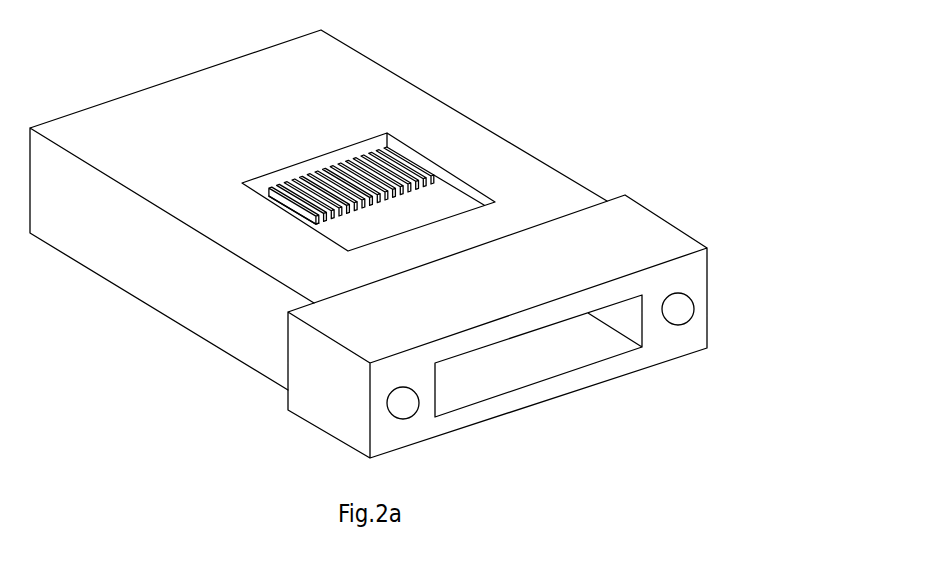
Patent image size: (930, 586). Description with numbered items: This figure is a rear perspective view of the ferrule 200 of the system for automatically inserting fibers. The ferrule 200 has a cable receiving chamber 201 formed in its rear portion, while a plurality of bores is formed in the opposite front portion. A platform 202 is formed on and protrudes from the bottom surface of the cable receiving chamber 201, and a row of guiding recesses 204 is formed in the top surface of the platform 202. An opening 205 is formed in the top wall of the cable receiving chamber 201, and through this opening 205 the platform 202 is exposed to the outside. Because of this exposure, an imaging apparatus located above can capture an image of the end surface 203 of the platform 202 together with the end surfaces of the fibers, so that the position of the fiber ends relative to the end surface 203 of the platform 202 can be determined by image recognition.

The ferrule 200 is at (388, 100).
The cable receiving chamber 201 is at (527, 356).
The platform 202 is at (268, 195).
The end surface of the platform 203 is at (328, 222).
The guiding recesses 204 is at (384, 170).
The opening 205 is at (433, 203).